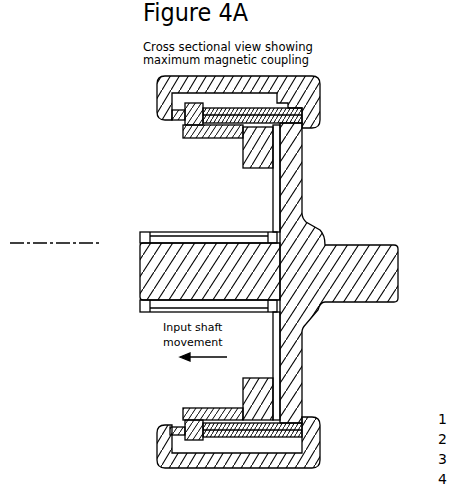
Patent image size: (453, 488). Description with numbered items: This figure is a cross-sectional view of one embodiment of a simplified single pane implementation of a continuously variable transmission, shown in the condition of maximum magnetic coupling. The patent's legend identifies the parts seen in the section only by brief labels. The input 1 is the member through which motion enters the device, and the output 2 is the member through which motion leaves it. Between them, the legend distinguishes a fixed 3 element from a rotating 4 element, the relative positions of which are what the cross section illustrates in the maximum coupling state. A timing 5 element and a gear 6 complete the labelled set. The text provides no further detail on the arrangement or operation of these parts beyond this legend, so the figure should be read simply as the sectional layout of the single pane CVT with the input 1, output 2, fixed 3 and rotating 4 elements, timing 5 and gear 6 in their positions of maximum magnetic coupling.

The input 1 is at (205, 198).
The output 2 is at (300, 266).
The fixed 3 is at (258, 158).
The rotating 4 is at (277, 108).
The timing 5 is at (190, 125).
The gear 6 is at (195, 112).